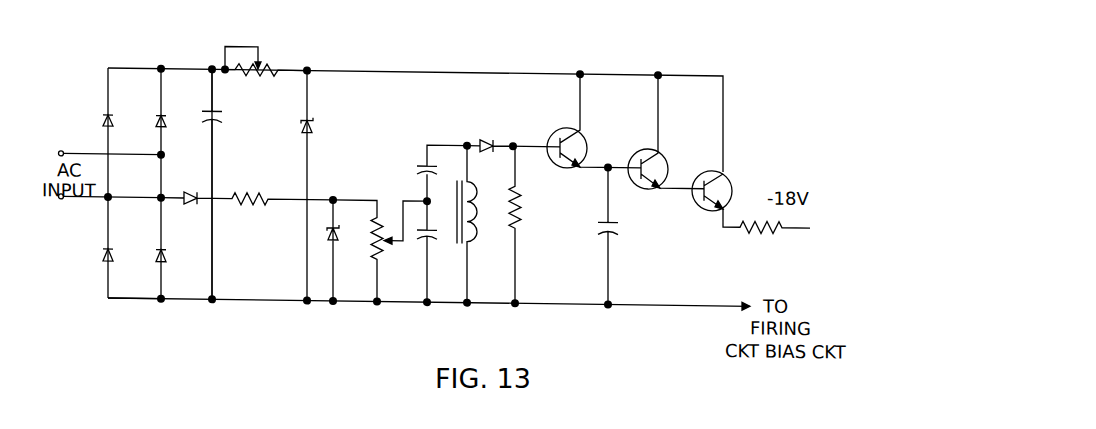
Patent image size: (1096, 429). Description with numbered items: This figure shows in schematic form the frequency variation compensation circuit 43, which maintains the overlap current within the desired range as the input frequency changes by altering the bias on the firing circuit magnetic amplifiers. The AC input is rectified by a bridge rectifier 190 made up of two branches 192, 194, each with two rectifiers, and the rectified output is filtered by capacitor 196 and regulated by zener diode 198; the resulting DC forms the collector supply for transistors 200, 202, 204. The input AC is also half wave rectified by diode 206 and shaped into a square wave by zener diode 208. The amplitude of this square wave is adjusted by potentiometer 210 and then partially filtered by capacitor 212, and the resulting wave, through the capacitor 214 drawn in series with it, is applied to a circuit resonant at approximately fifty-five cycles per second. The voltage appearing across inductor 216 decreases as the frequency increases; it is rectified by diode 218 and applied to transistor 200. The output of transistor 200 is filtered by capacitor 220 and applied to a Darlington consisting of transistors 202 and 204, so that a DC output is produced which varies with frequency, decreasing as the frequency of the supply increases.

The frequency variation compensation circuit 43 is at (293, 50).
The bridge rectifier 190 is at (147, 316).
The branch of bridge rectifier 192 is at (118, 226).
The branch of bridge rectifier 194 is at (168, 232).
The capacitor 196 is at (222, 111).
The zener diode 198 is at (314, 118).
The transistor 200 is at (551, 125).
The transistor 202 is at (638, 140).
The transistor 204 is at (700, 160).
The diode 206 is at (247, 189).
The zener diode 208 is at (330, 228).
The potentiometer 210 is at (380, 251).
The capacitor 212 is at (439, 236).
The capacitor 214 is at (419, 157).
The inductor 216 is at (461, 161).
The diode 218 is at (506, 147).
The capacitor 220 is at (611, 228).